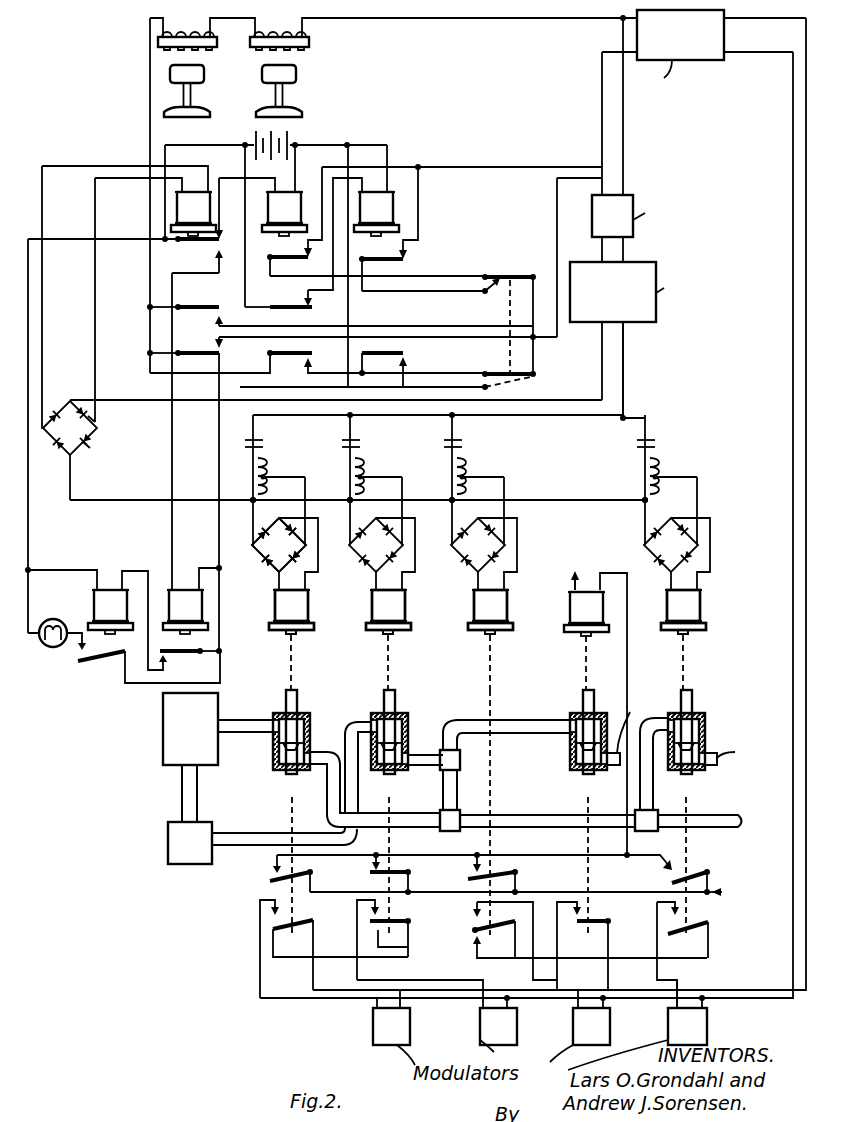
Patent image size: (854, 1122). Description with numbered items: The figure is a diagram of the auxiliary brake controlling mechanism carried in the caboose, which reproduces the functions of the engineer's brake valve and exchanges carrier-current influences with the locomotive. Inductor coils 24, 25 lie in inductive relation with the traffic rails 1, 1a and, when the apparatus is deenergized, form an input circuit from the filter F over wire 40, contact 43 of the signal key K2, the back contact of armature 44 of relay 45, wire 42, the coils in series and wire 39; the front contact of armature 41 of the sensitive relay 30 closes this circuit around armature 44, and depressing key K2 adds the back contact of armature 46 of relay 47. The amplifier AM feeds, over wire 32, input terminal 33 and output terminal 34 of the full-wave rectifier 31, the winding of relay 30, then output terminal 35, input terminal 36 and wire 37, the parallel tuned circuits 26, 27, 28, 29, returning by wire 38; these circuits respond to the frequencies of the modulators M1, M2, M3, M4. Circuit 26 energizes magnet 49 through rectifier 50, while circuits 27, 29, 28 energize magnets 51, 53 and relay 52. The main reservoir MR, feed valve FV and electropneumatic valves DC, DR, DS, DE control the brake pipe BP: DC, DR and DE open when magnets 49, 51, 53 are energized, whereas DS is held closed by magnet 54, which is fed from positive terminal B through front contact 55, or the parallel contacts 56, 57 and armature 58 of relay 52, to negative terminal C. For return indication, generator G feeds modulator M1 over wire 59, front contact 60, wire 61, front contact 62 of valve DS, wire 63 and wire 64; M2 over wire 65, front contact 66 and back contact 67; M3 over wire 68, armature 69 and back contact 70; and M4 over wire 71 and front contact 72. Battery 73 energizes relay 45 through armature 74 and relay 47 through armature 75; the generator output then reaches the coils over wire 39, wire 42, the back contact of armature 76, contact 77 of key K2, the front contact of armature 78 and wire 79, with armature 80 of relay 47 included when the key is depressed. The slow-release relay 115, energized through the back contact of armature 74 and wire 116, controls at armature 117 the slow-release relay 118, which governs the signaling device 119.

The traffic rail 1 is at (195, 100).
The traffic rail 1a is at (287, 100).
The inductor coil 24 is at (187, 30).
The inductor coil 25 is at (279, 30).
The tuned circuit 26 is at (281, 552).
The tuned circuit 27 is at (378, 552).
The tuned circuit 28 is at (480, 552).
The tuned circuit 29 is at (673, 552).
The sensitive relay 30 is at (203, 211).
The full-wave rectifier 31 is at (90, 448).
The wire 32 is at (522, 400).
The input terminal of rectifier 33 is at (70, 415).
The output terminal of rectifier 34 is at (43, 432).
The output terminal of rectifier 35 is at (97, 430).
The input terminal of rectifier 36 is at (72, 456).
The wire 37 is at (108, 502).
The wire 38 is at (623, 405).
The wire 39 is at (469, 34).
The wire 40 is at (576, 273).
The armature of relay 30 41 is at (200, 346).
The wire 42 is at (148, 110).
The contact of signal key 43 is at (449, 327).
The armature of relay 45 44 is at (288, 357).
The relay 45 is at (275, 235).
The armature of relay 47 46 is at (414, 345).
The relay 47 is at (383, 213).
The magnet 49 is at (276, 606).
The full-wave rectifier 50 is at (268, 562).
The magnet 51 is at (373, 606).
The relay 52 is at (475, 606).
The magnet 53 is at (712, 606).
The magnet 54 is at (571, 608).
The front contact of valve DR 55 is at (373, 881).
The front contact of valve DC 56 is at (275, 880).
The front contact of valve DE 57 is at (667, 880).
The armature of relay 52 58 is at (474, 881).
The wire 59 is at (326, 1000).
The front contact of valve DC 60 is at (249, 949).
The wire 61 is at (320, 990).
The front contact of valve DS 62 is at (577, 923).
The wire 63 is at (805, 908).
The wire 64 is at (793, 946).
The wire 65 is at (435, 970).
The front contact of valve DR 66 is at (385, 918).
The back contact of valve DC 67 is at (340, 955).
The wire 68 is at (575, 990).
The armature of relay 52 69 is at (475, 925).
The back contact of valve DR 70 is at (390, 937).
The wire 71 is at (675, 990).
The front contact of valve DE 72 is at (668, 920).
The battery 73 is at (292, 135).
The armature of relay 30 74 is at (203, 242).
The armature of relay 45 75 is at (303, 242).
The armature of relay 30 76 is at (183, 296).
The contact of signal key 77 is at (431, 298).
The armature of relay 45 78 is at (306, 262).
The wire 79 is at (458, 167).
The armature of relay 47 80 is at (403, 262).
The slow-release relay 115 is at (188, 588).
The wire 116 is at (235, 377).
The armature of relay 115 117 is at (178, 655).
The slow-release relay 118 is at (98, 608).
The signaling device 119 is at (73, 647).
The signal key K2 is at (403, 316).
The generator G is at (679, 54).
The filter F is at (643, 216).
The amplifier AM is at (658, 292).
The main reservoir MR is at (163, 745).
The feed valve FV is at (165, 847).
The electropneumatic valve (charging valve) DC is at (336, 758).
The electropneumatic valve (running valve) DR is at (394, 751).
The electropneumatic valve (service valve) DS is at (530, 760).
The electropneumatic valve (emergency valve) DE is at (686, 760).
The brake pipe BP is at (725, 822).
The positive terminal of source of power B is at (722, 893).
The negative terminal of source of power C is at (576, 572).
The modulator M1 is at (391, 1026).
The modulator M2 is at (498, 1021).
The modulator M3 is at (591, 1021).
The modulator M4 is at (687, 1021).